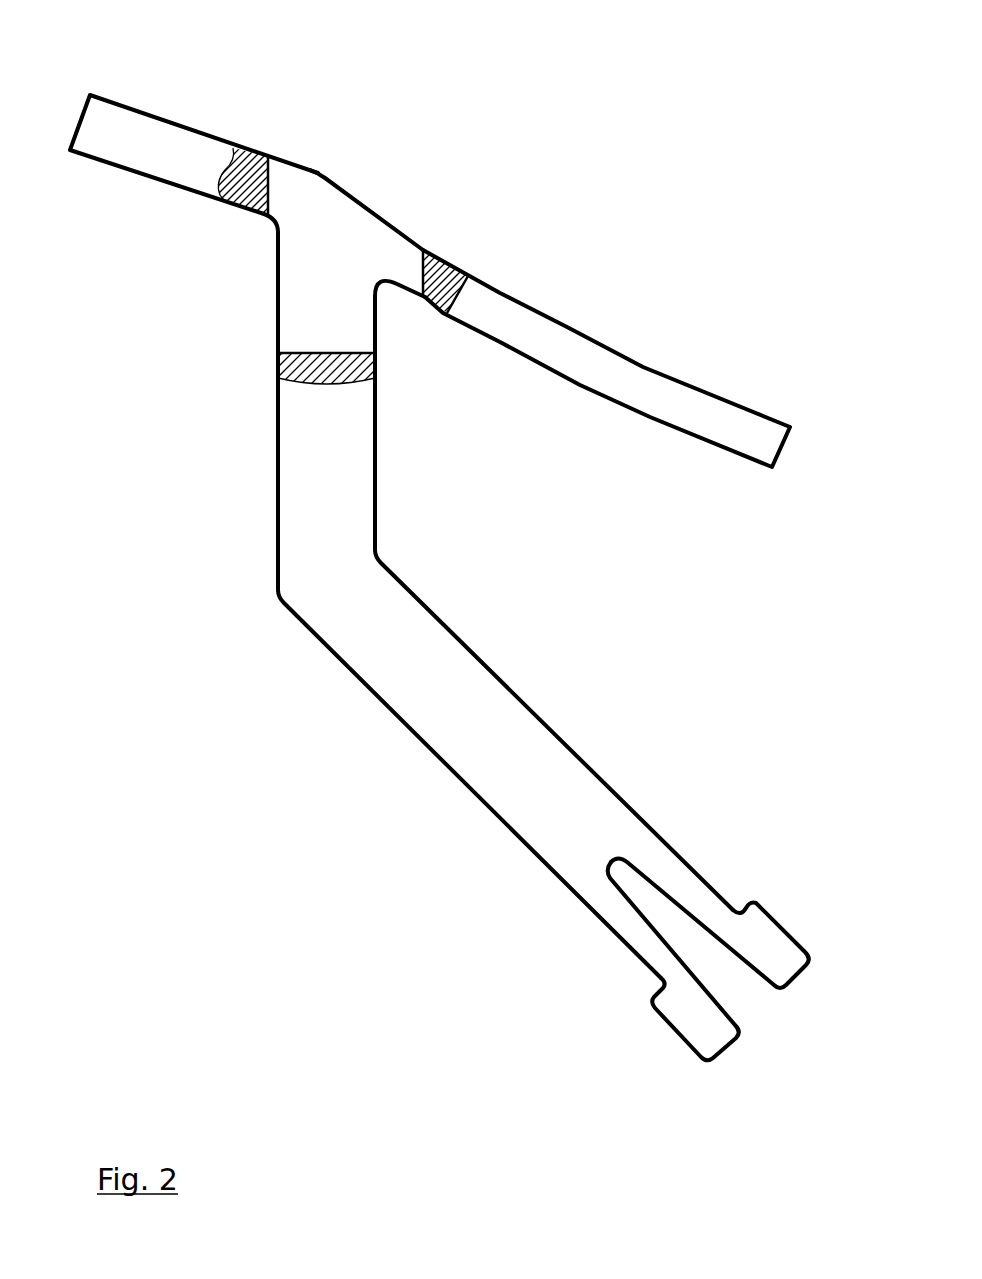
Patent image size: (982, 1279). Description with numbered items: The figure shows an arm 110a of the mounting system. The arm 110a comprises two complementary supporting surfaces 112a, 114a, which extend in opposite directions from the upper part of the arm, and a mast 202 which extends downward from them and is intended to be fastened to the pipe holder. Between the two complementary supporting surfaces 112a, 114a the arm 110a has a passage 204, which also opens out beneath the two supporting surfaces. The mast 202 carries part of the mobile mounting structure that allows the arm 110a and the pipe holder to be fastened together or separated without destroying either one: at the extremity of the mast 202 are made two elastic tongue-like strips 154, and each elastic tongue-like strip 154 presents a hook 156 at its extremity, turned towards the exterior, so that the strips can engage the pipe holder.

The arm 110a is at (645, 140).
The complementary supporting surface 112a is at (672, 378).
The complementary supporting surface 114a is at (200, 133).
The mast 202 is at (387, 657).
The passage 204 is at (318, 217).
The elastic tongue-like strip 154 is at (633, 923).
The hook 156 is at (653, 992).